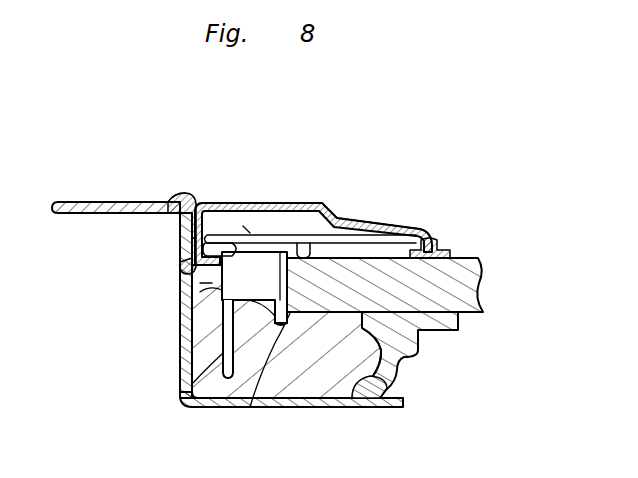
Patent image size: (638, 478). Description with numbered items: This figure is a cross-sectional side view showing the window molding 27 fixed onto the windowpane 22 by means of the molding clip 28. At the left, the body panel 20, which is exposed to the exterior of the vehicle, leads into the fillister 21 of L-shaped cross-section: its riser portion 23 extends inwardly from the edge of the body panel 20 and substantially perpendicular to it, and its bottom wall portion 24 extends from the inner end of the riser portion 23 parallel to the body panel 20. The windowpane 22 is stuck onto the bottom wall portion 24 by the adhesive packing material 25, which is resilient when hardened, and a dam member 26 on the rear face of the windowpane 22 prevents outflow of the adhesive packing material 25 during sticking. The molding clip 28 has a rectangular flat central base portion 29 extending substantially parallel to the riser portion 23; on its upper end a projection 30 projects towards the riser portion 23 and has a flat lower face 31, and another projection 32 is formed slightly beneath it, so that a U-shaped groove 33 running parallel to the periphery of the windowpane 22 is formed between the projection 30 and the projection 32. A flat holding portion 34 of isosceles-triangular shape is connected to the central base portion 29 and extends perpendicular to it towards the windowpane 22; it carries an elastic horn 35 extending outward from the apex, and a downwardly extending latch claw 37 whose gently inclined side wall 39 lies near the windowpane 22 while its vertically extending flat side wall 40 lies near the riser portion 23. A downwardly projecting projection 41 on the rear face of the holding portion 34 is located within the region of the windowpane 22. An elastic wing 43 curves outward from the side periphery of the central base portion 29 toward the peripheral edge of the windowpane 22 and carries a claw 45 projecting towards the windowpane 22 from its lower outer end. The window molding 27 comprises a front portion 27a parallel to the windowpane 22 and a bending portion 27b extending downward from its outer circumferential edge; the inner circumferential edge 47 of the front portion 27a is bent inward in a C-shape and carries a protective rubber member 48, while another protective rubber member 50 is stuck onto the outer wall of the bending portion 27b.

The body panel 20 is at (98, 201).
The fillister 21 is at (270, 335).
The windowpane 22 is at (466, 306).
The riser portion 23 is at (181, 335).
The bottom wall portion 24 is at (292, 409).
The adhesive packing material 25 is at (333, 382).
The dam member 26 is at (385, 377).
The window molding 27 is at (318, 202).
The front portion 27a is at (323, 202).
The bending portion 27b is at (194, 228).
The molding clip 28 is at (243, 228).
The central base portion 29 is at (222, 310).
The projection 30 is at (192, 197).
The flat lower face 31 is at (188, 243).
The projection 32 is at (210, 288).
The groove 33 is at (200, 271).
The holding portion 34 is at (340, 213).
The elastic horn 35 is at (424, 221).
The latch claw 37 is at (230, 246).
The gently inclined side wall 39 is at (272, 235).
The vertically extending flat side wall 40 is at (200, 202).
The projection 41 is at (335, 240).
The elastic wing 43 is at (192, 337).
The claw 45 is at (250, 407).
The inner circumferential edge 47 is at (440, 238).
The rubber member 48 is at (482, 268).
The rubber member 50 is at (168, 200).